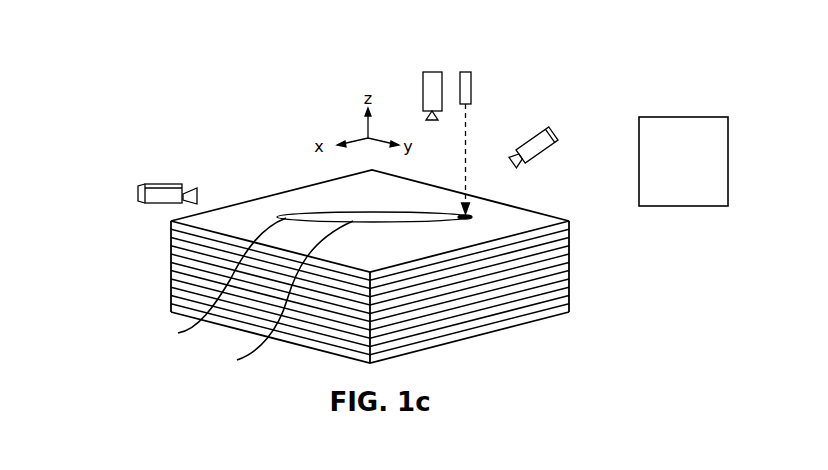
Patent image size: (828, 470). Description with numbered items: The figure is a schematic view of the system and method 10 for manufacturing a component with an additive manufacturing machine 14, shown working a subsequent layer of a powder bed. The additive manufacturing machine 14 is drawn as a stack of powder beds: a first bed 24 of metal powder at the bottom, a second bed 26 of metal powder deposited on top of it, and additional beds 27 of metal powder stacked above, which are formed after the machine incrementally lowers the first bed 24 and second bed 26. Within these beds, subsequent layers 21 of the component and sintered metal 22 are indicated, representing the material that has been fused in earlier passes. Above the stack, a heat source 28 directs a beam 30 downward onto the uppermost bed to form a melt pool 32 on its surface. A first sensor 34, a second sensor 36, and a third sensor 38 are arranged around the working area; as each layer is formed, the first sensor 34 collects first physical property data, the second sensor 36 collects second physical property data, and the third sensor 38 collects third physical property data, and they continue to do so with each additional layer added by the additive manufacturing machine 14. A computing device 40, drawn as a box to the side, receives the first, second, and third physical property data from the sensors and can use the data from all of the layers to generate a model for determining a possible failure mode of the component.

The system and method 10 is at (216, 121).
The additive manufacturing machine 14 is at (531, 66).
The subsequent layers 21 is at (283, 296).
The sintered metal 22 is at (215, 281).
The first bed 24 is at (570, 309).
The second bed 26 is at (570, 300).
The additional beds 27 is at (572, 221).
The heat source 28 is at (471, 98).
The beam 30 is at (467, 146).
The melt pool 32 is at (470, 218).
The first sensor 34 is at (423, 96).
The second sensor 36 is at (554, 134).
The third sensor 38 is at (158, 184).
The computing device 40 is at (683, 161).